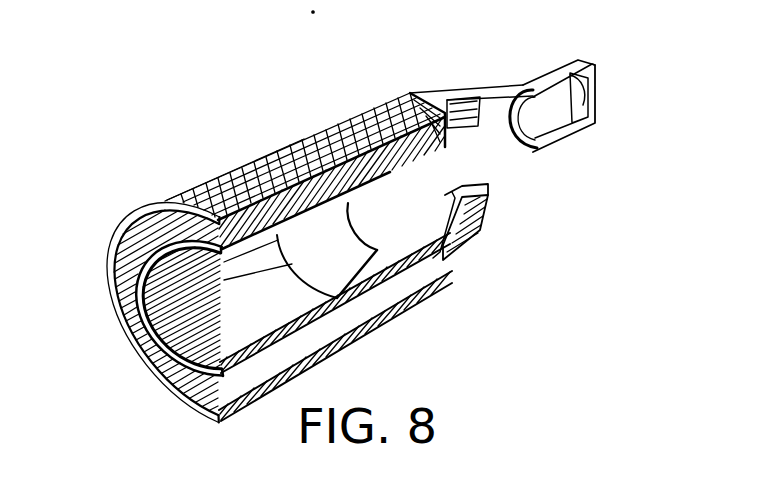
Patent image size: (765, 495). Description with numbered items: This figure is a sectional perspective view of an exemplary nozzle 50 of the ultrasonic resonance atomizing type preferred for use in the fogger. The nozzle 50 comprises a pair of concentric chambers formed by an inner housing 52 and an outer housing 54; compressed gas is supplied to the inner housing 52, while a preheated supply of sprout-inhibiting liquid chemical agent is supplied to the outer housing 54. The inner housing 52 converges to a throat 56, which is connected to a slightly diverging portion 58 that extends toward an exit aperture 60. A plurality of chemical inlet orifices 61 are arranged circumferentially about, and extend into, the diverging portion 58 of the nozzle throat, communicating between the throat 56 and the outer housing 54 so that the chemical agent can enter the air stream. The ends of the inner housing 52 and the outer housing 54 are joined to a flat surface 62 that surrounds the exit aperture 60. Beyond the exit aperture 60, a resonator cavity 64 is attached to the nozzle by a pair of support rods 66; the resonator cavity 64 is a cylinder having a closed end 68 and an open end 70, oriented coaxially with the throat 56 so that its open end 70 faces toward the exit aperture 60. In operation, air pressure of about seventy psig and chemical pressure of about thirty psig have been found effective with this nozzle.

The nozzle 50 is at (184, 160).
The inner housing 52 is at (182, 364).
The outer housing 54 is at (108, 256).
The throat 56 is at (381, 232).
The diverging portion 58 is at (430, 205).
The exit aperture 60 is at (463, 186).
The chemical inlet orifices 61 is at (437, 258).
The flat surface 62 is at (484, 135).
The resonator cavity 64 is at (558, 115).
The support rods 66 is at (475, 88).
The closed end 68 is at (597, 93).
The open end 70 is at (526, 150).